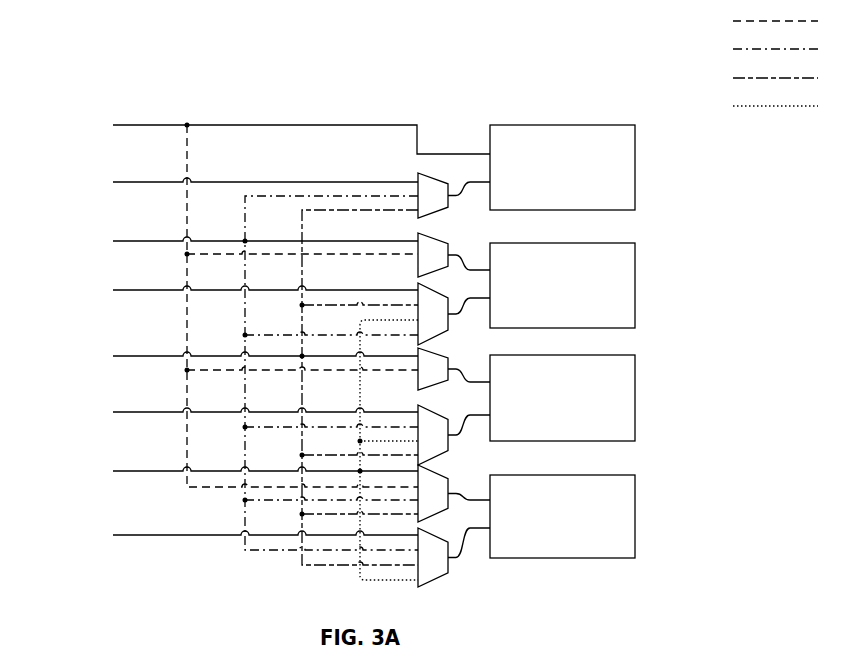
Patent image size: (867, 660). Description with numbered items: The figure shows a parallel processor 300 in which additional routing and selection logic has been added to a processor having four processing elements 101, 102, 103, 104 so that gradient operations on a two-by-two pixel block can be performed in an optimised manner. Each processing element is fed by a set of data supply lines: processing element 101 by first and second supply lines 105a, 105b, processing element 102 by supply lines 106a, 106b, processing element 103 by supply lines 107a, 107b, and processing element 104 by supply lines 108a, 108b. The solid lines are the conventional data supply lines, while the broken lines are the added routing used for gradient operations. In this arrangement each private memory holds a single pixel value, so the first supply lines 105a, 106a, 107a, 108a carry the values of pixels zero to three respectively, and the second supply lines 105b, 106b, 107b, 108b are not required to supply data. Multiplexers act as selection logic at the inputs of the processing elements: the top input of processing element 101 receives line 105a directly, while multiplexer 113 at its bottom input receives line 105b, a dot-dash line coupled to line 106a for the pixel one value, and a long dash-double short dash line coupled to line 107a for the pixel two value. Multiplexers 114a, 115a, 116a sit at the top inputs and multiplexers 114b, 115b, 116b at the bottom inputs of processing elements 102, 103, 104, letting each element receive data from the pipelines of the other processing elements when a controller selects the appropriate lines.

The processor 300 is at (57, 45).
The processing element 101 is at (635, 184).
The processing element 102 is at (635, 247).
The processing element 103 is at (635, 360).
The processing element 104 is at (635, 479).
The first supply line 105a is at (333, 125).
The second supply line 105b is at (316, 182).
The first supply line 106a is at (152, 241).
The second supply line 106b is at (140, 290).
The first supply line 107a is at (140, 356).
The second supply line 107b is at (140, 412).
The first supply line 108a is at (140, 471).
The second supply line 108b is at (148, 535).
The multiplexer 113 is at (418, 178).
The multiplexer 114a is at (421, 233).
The multiplexer 114b is at (418, 284).
The multiplexer 115a is at (421, 348).
The multiplexer 115b is at (420, 404).
The multiplexer 116a is at (421, 466).
The multiplexer 116b is at (440, 580).